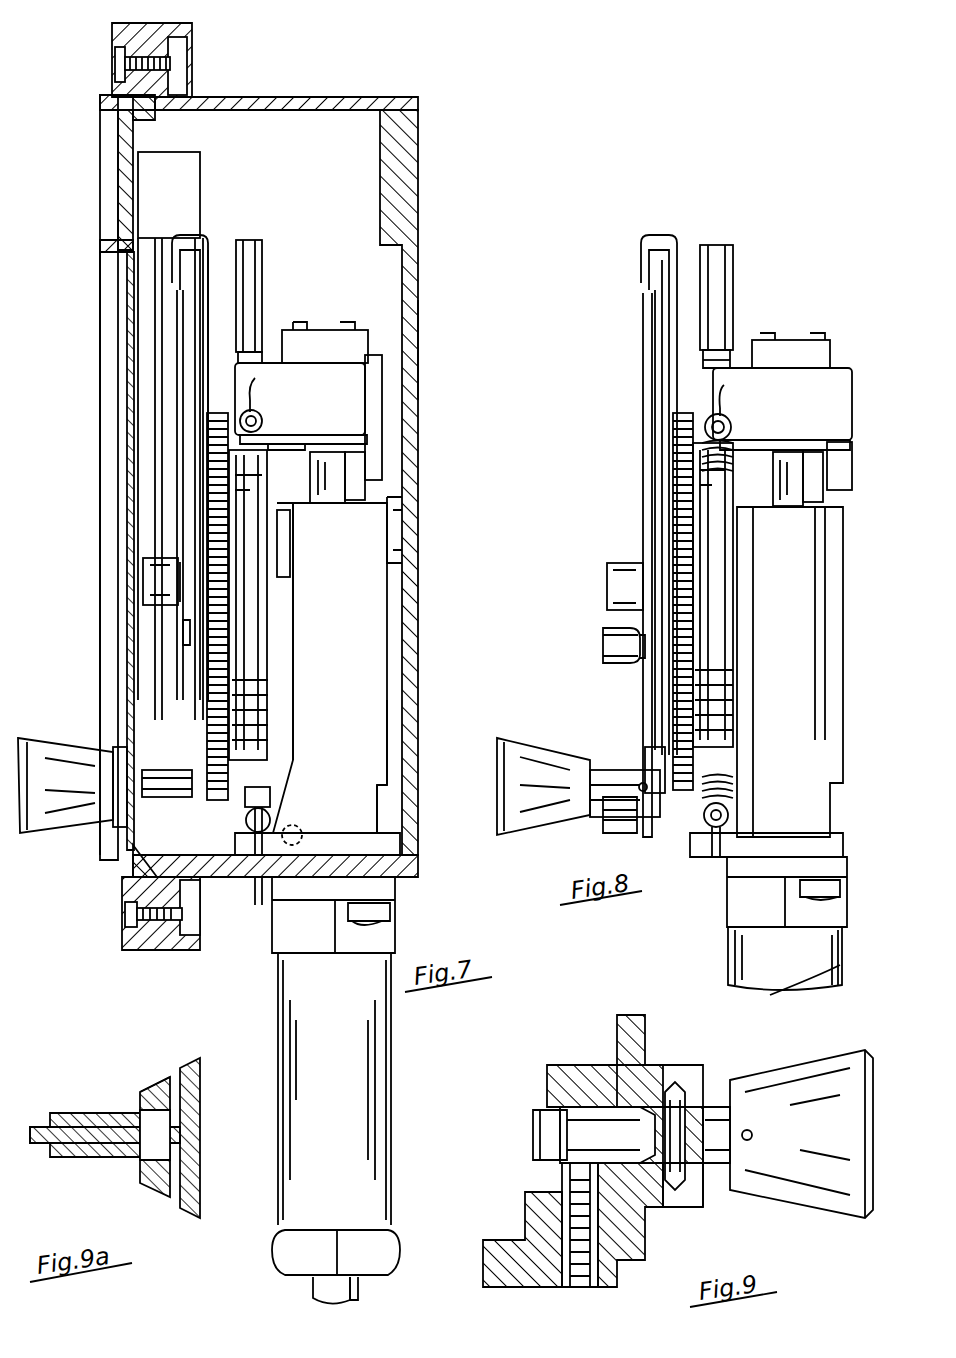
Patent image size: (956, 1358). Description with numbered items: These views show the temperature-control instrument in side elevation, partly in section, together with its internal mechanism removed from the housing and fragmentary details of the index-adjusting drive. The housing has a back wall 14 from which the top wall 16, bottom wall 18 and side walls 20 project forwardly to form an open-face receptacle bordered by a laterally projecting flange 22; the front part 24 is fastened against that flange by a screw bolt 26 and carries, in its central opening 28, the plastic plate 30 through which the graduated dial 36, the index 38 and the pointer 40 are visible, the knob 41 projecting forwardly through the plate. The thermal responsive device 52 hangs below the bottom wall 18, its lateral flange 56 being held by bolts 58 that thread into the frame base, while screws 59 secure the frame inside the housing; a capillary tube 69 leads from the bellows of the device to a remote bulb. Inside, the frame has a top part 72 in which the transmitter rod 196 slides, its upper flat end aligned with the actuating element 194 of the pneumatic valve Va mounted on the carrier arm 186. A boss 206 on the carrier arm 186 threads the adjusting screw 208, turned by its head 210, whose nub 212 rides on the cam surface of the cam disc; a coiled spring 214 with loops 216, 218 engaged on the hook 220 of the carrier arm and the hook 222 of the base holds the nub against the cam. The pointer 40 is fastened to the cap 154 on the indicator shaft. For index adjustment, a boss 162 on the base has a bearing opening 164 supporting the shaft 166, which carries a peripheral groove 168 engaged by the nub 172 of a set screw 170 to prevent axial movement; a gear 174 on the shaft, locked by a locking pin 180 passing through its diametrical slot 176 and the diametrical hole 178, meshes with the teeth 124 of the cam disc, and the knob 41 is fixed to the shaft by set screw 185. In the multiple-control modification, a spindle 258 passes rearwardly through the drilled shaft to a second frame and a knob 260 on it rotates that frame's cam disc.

In FIG. 7, the back wall 14 is at (420, 666).
In FIG. 7, the top wall 16 is at (376, 86).
In FIG. 7, the bottom wall 18 is at (248, 881).
In FIG. 8, the bottom wall 18 is at (766, 845).
In FIG. 7, the side walls 20 is at (425, 343).
In FIG. 7, the laterally projecting flange 22 is at (180, 955).
In FIG. 7, the front part 24 is at (97, 81).
In FIG. 7, the screw bolt 26 is at (110, 58).
In FIG. 7, the opening 28 is at (125, 293).
In FIG. 7, the plastic plate 30 is at (115, 403).
In FIG. 7, the graduated dial 36 is at (190, 475).
In FIG. 7, the index 38 is at (172, 257).
In FIG. 8, the index 38 is at (640, 266).
In FIG. 7, the pointer 40 is at (172, 437).
In FIG. 8, the pointer 40 is at (643, 402).
In FIG. 7, the knob 41 is at (105, 785).
In FIG. 8, the knob 41 is at (578, 786).
In FIG. 9, the knob 41 is at (801, 1134).
In FIG. 9A, the knob 41 is at (162, 1087).
In FIG. 7, the thermal responsive device 52 is at (336, 1184).
In FIG. 8, the thermal responsive device 52 is at (740, 963).
In FIG. 7, the lateral flange 56 is at (380, 889).
In FIG. 8, the lateral flange 56 is at (730, 893).
In FIG. 7, the bolts 58 is at (390, 917).
In FIG. 8, the bolts 58 is at (840, 891).
In FIG. 7, the screws 59 is at (298, 846).
In FIG. 7, the capillary tube 69 is at (360, 1293).
In FIG. 7, the top part 72 is at (344, 698).
In FIG. 8, the top part 72 is at (802, 664).
In FIG. 7, the teeth 124 is at (210, 709).
In FIG. 8, the teeth 124 is at (673, 687).
In FIG. 7, the cap 154 is at (145, 579).
In FIG. 8, the cap 154 is at (610, 566).
In FIG. 9, the boss 162 is at (528, 1222).
In FIG. 9, the bearing opening 164 is at (610, 1082).
In FIG. 9A, the bearing opening 164 is at (124, 1165).
In FIG. 9, the shaft 166 is at (547, 1145).
In FIG. 9, the peripheral groove 168 is at (545, 1120).
In FIG. 9, the set screw 170 is at (562, 1282).
In FIG. 9, the nub 172 is at (562, 1165).
In FIG. 9, the gear 174 is at (645, 1048).
In FIG. 9, the diametrical slot 176 is at (670, 1084).
In FIG. 9, the diametrical hole 178 is at (700, 1182).
In FIG. 9, the locking pin 180 is at (680, 1222).
In FIG. 9, the set screw 185 is at (750, 1129).
In FIG. 7, the carrier arm 186 is at (365, 411).
In FIG. 8, the carrier arm 186 is at (782, 437).
In FIG. 7, the actuating element 194 is at (372, 446).
In FIG. 8, the actuating element 194 is at (830, 357).
In FIG. 7, the transmitter rod 196 is at (345, 493).
In FIG. 7, the boss 206 is at (240, 391).
In FIG. 7, the adjusting screw 208 is at (265, 341).
In FIG. 8, the adjusting screw 208 is at (722, 358).
In FIG. 7, the head 210 is at (255, 286).
In FIG. 8, the head 210 is at (712, 291).
In FIG. 7, the nub 212 is at (268, 450).
In FIG. 7, the coiled spring 214 is at (268, 796).
In FIG. 8, the coiled spring 214 is at (730, 791).
In FIG. 7, the loop 216 is at (262, 421).
In FIG. 8, the loop 216 is at (732, 426).
In FIG. 8, the loop 218 is at (728, 813).
In FIG. 7, the hook 220 is at (262, 396).
In FIG. 8, the hook 220 is at (728, 396).
In FIG. 7, the hook 222 is at (284, 873).
In FIG. 8, the hook 222 is at (725, 849).
In FIG. 9A, the spindle 258 is at (60, 1165).
In FIG. 9A, the knob 260 is at (208, 1050).
In FIG. 7, the valve Va is at (330, 336).
In FIG. 8, the valve Va is at (800, 340).